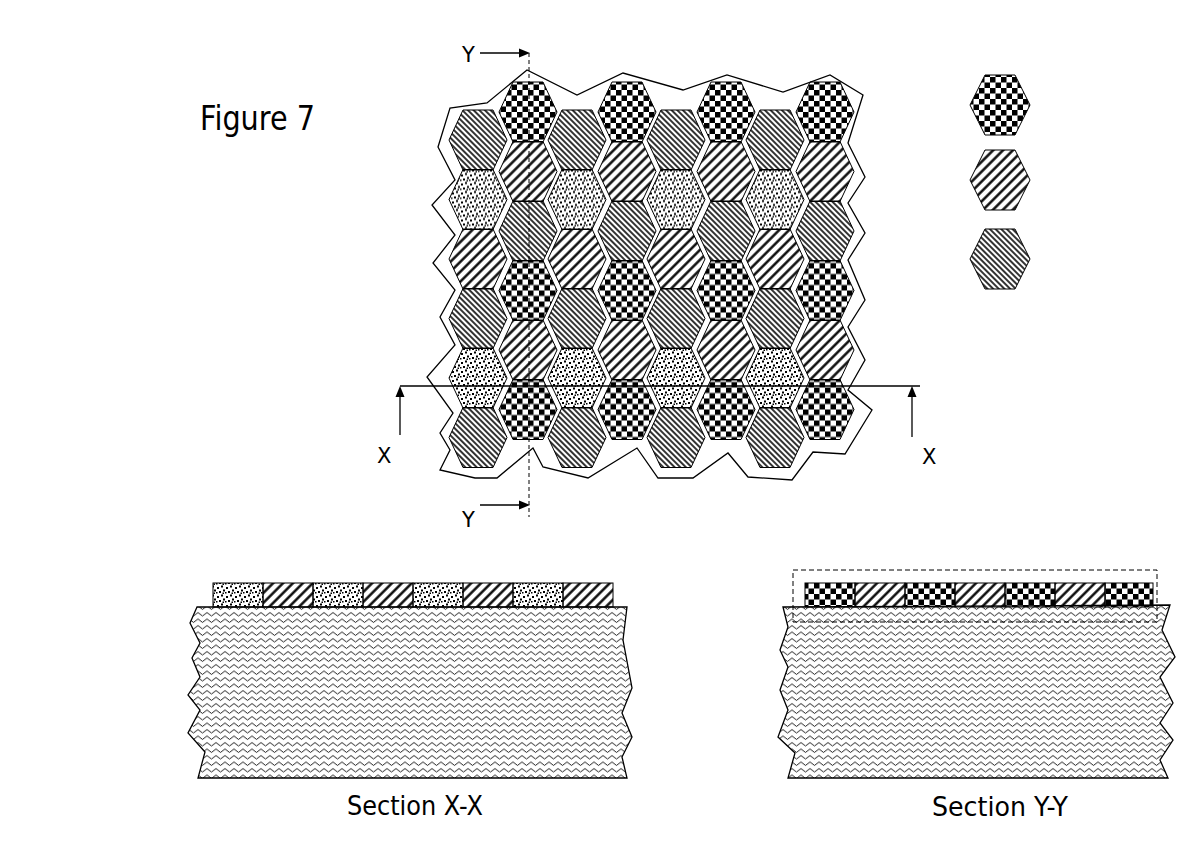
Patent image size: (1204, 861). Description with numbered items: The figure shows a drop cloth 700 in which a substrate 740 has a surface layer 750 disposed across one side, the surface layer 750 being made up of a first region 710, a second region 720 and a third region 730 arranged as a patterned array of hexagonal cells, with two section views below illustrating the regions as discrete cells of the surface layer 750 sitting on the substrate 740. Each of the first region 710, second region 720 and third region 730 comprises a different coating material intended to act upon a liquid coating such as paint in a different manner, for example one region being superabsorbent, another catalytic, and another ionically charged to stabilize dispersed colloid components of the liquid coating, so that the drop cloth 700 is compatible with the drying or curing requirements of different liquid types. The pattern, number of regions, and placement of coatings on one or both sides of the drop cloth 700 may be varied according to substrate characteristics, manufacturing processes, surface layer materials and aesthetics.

The drop cloth 700 is at (562, 275).
The first region 710 is at (1030, 90).
The second region 720 is at (1028, 167).
The third region 730 is at (1028, 245).
The substrate 740 is at (1172, 690).
The surface layer 750 is at (922, 570).